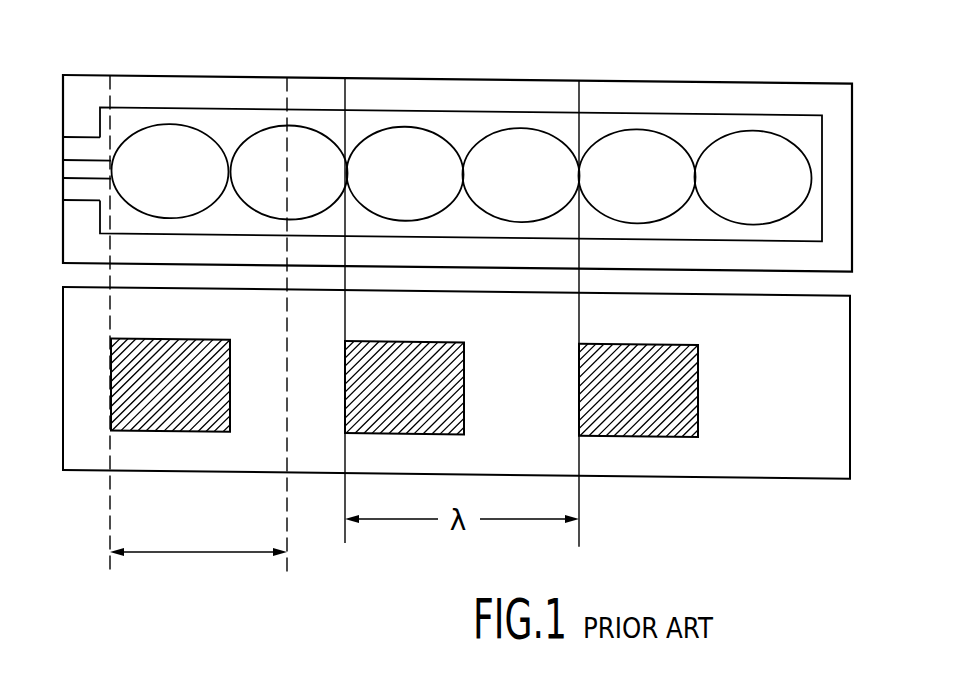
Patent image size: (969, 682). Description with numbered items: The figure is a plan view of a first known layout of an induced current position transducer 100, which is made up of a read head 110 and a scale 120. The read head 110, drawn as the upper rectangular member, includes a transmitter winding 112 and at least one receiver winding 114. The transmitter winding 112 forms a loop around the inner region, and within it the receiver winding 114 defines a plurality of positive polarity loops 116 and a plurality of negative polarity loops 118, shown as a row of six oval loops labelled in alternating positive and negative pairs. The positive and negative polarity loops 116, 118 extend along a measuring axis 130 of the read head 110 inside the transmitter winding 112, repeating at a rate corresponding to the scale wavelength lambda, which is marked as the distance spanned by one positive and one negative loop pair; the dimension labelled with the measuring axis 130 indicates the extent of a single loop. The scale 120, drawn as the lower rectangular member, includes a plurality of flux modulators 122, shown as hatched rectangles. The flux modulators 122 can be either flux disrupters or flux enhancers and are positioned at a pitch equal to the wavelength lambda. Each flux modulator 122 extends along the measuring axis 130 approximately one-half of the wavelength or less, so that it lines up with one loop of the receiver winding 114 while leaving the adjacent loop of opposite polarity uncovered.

The induced current position transducer 100 is at (486, 289).
The read head 110 is at (778, 83).
The transmitter winding 112 is at (207, 107).
The receiver winding 114 is at (475, 127).
The positive polarity loops 116 is at (145, 127).
The negative polarity loops 118 is at (286, 126).
The scale 120 is at (812, 481).
The flux modulators 122 is at (207, 338).
The measuring axis 130 is at (198, 567).